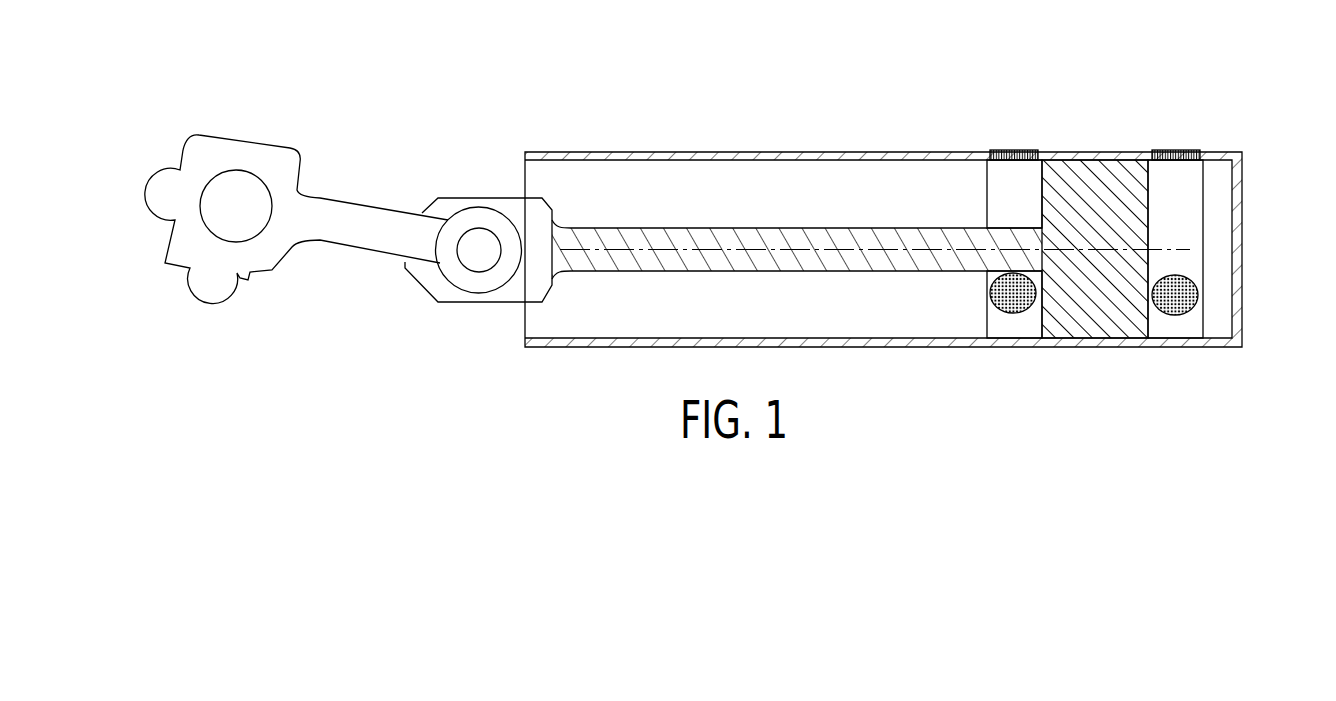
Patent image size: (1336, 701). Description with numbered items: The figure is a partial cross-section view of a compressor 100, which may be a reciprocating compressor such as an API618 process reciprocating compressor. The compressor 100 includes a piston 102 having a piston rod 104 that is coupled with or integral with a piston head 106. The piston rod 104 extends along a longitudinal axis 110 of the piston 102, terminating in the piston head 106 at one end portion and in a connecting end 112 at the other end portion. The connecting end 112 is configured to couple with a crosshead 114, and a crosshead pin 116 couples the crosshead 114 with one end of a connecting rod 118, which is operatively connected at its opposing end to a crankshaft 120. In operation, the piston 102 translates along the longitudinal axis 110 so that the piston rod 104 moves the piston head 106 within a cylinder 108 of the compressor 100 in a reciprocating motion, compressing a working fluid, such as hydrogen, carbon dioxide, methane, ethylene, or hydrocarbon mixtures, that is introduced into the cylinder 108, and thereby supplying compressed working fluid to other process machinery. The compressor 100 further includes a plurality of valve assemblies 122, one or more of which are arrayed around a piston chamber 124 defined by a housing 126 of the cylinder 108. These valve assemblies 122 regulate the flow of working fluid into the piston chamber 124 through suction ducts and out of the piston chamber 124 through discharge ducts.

The compressor 100 is at (195, 85).
The piston 102 is at (782, 220).
The piston rod 104 is at (860, 227).
The piston head 106 is at (1093, 170).
The cylinder 108 is at (705, 150).
The longitudinal axis 110 is at (1067, 250).
The connecting end 112 is at (572, 222).
The crosshead 114 is at (507, 291).
The crosshead pin 116 is at (477, 238).
The connecting rod 118 is at (370, 218).
The crankshaft 120 is at (243, 183).
The valve assemblies 122 is at (992, 150).
The piston chamber 124 is at (1197, 233).
The housing 126 is at (1173, 347).